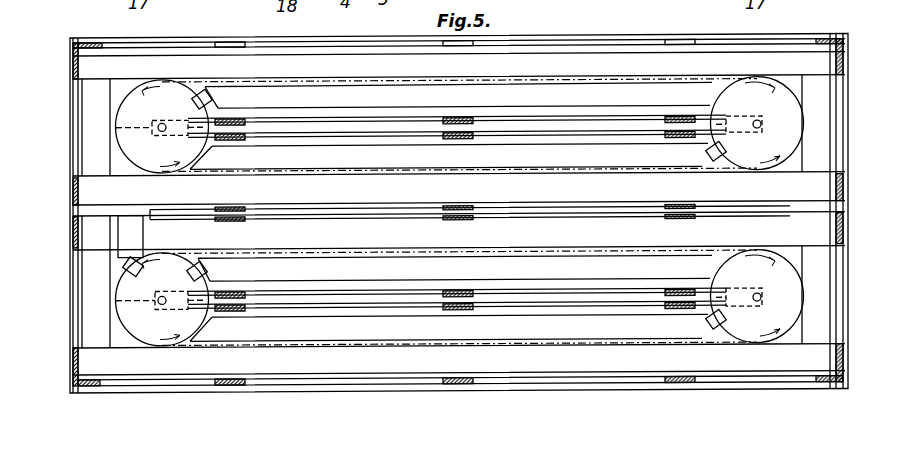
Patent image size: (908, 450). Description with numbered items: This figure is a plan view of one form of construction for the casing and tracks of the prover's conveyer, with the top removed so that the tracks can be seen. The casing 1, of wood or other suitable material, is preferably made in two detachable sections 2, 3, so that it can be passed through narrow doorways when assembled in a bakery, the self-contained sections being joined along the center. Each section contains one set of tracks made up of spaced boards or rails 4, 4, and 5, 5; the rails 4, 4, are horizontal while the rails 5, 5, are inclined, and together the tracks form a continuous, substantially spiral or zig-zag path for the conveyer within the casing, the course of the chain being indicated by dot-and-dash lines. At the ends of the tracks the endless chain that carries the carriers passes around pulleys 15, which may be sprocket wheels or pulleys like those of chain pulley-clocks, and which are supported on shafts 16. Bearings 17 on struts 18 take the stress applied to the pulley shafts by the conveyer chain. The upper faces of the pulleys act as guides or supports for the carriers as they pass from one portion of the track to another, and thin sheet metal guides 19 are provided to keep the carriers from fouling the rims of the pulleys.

The casing 1 is at (848, 205).
The detachable section 2 is at (846, 258).
The detachable section 3 is at (848, 157).
The horizontal rails 4 is at (449, 258).
The inclined rails 5 is at (455, 166).
The pulley 15 is at (157, 127).
The shaft 16 is at (158, 130).
The bearing 17 is at (150, 121).
The strut 18 is at (299, 300).
The sheet metal guide 19 is at (193, 97).